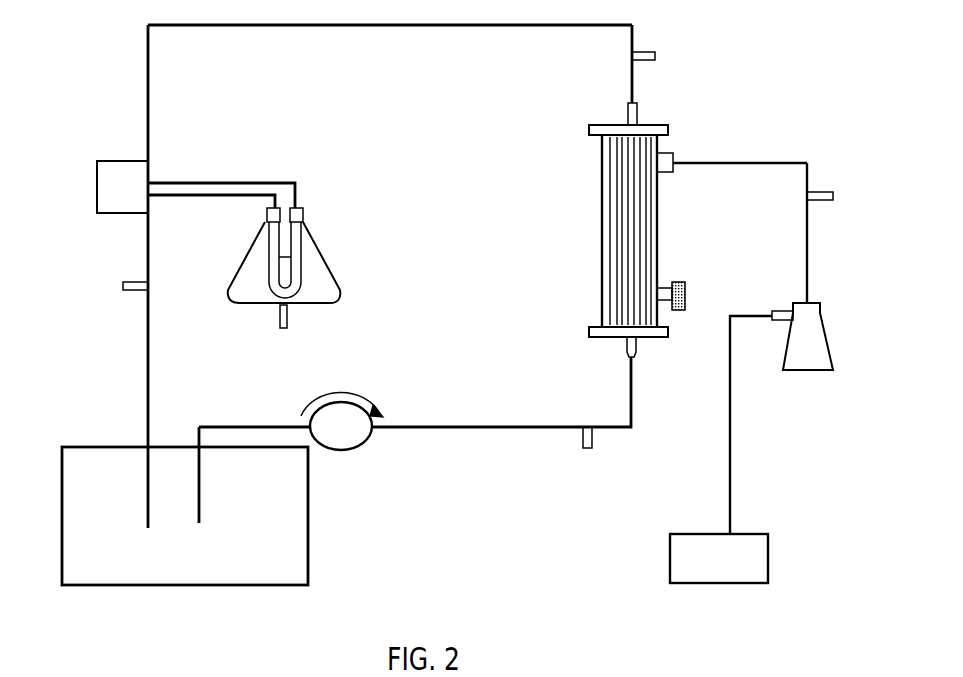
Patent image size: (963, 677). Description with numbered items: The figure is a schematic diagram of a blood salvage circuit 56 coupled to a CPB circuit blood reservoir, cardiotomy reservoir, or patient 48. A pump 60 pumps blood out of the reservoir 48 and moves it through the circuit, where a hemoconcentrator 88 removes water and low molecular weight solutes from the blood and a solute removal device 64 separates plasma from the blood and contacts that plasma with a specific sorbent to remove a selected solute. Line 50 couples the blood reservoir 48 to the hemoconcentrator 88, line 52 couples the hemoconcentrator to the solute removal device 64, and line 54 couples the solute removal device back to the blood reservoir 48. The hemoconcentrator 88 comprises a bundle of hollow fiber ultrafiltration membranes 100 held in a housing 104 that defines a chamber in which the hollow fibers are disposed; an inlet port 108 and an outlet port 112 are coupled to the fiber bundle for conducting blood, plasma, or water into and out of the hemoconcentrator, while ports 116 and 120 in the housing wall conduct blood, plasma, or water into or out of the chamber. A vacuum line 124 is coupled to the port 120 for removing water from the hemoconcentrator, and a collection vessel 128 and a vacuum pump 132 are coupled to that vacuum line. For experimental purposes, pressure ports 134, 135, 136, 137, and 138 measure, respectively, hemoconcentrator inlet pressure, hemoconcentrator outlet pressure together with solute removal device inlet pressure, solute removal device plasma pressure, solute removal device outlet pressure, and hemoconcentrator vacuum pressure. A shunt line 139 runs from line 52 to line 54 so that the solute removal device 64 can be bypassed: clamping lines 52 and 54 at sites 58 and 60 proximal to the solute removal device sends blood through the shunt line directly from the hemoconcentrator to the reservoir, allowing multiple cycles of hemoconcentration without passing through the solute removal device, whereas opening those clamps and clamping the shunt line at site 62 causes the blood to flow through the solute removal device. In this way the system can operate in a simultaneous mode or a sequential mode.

The blood reservoir 48 is at (68, 520).
The line 50 is at (449, 425).
The line 52 is at (405, 27).
The line 54 is at (150, 378).
The blood salvage circuit 56 is at (487, 470).
The clamping site 58 is at (251, 182).
The pump 60 is at (355, 432).
The clamping site 62 is at (95, 175).
The solute removal device 64 is at (320, 306).
The hemoconcentrator 88 is at (598, 243).
The hollow fiber ultrafiltration membranes 100 is at (646, 212).
The housing 104 is at (659, 243).
The inlet port 108 is at (636, 352).
The outlet port 112 is at (639, 112).
The port 116 is at (664, 284).
The port 120 is at (680, 150).
The vacuum line 124 is at (795, 160).
The collection vessel 128 is at (818, 343).
The vacuum pump 132 is at (760, 558).
The pressure port 134 is at (589, 450).
The pressure port 135 is at (657, 56).
The pressure port 136 is at (279, 326).
The pressure port 137 is at (128, 291).
The pressure port 138 is at (824, 201).
The shunt line 139 is at (103, 214).